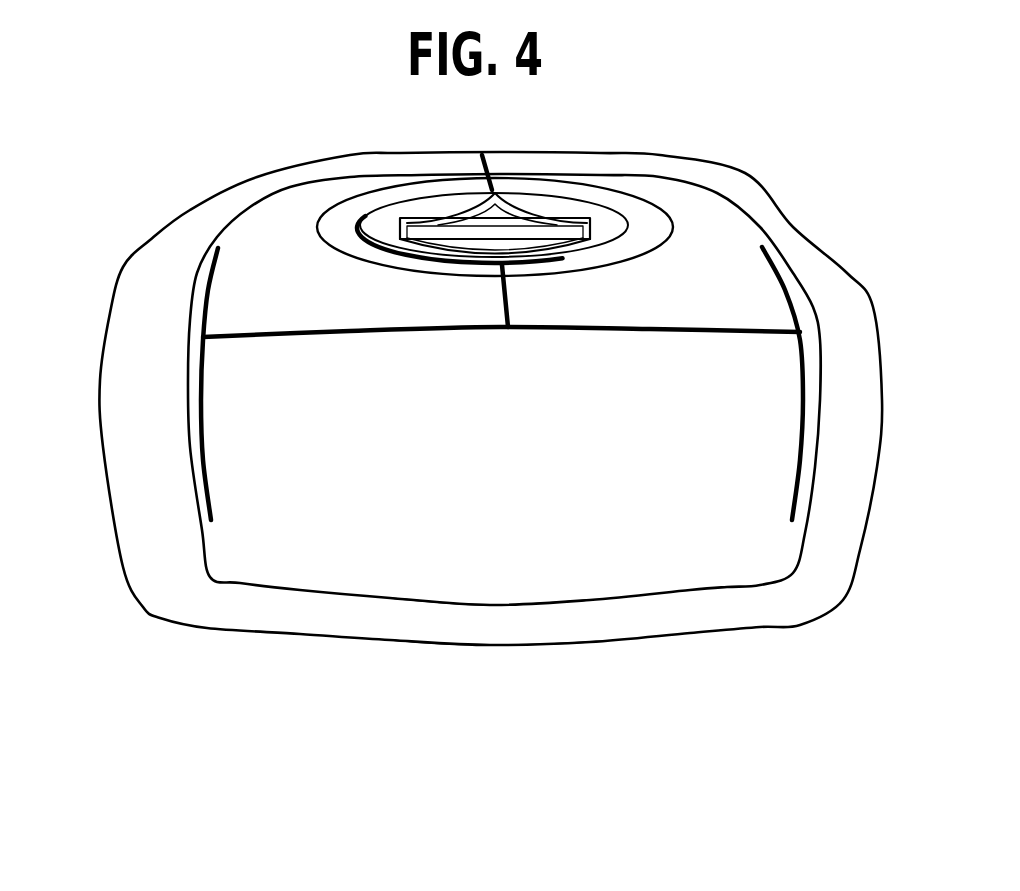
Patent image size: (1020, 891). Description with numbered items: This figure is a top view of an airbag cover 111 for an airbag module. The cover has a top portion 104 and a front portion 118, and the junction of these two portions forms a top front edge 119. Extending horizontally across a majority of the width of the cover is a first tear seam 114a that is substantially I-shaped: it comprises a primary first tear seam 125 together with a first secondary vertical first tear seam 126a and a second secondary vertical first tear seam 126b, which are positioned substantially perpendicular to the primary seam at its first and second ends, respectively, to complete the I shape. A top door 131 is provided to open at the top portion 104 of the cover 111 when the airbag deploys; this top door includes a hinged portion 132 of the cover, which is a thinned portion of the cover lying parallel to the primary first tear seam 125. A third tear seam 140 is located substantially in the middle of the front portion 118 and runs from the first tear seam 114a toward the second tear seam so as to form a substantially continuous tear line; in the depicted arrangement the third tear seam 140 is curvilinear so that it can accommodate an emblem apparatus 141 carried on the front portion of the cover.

The airbag cover 111 is at (152, 678).
The top portion 104 is at (657, 490).
The front portion 118 is at (300, 280).
The primary first tear seam 125 is at (272, 330).
The first tear seam 114a is at (688, 315).
The first secondary vertical first tear seam 126a is at (208, 438).
The second secondary vertical first tear seam 126b is at (807, 450).
The top front edge 119 is at (807, 313).
The top door 131 is at (517, 425).
The hinged portion 132 is at (442, 603).
The third tear seam 140 is at (502, 297).
The emblem apparatus 141 is at (518, 235).